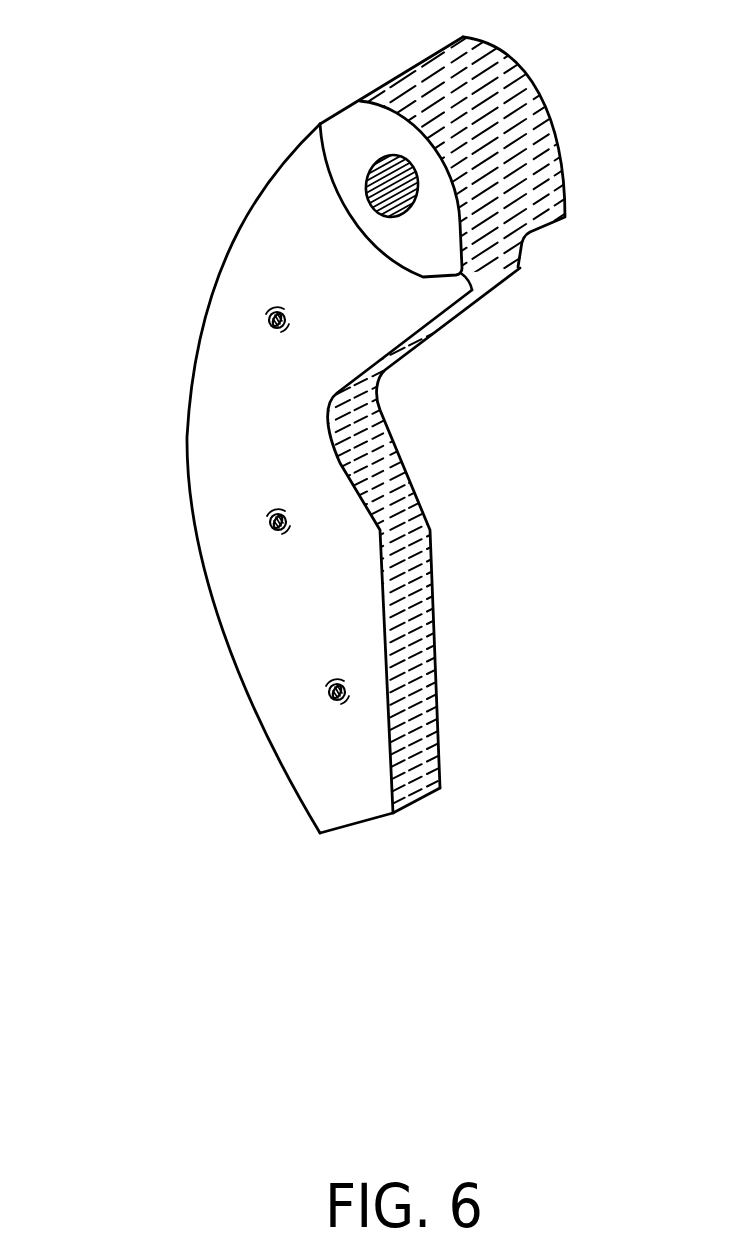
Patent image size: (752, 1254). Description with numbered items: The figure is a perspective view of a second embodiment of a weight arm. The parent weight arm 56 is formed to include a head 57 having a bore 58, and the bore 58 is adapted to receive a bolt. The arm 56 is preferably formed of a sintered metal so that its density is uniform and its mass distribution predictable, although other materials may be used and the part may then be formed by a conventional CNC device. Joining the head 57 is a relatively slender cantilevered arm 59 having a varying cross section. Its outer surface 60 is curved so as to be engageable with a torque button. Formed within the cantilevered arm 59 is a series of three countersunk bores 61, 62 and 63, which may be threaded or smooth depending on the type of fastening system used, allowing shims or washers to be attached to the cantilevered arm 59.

The parent weight arm 56 is at (135, 258).
The head 57 is at (490, 130).
The bore 58 is at (374, 172).
The cantilevered arm 59 is at (275, 637).
The outer surface 60 is at (193, 515).
The countersunk bore 61 is at (332, 710).
The countersunk bore 62 is at (270, 537).
The countersunk bore 63 is at (268, 333).